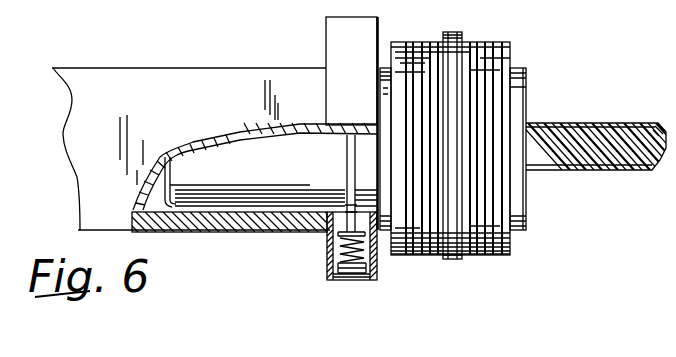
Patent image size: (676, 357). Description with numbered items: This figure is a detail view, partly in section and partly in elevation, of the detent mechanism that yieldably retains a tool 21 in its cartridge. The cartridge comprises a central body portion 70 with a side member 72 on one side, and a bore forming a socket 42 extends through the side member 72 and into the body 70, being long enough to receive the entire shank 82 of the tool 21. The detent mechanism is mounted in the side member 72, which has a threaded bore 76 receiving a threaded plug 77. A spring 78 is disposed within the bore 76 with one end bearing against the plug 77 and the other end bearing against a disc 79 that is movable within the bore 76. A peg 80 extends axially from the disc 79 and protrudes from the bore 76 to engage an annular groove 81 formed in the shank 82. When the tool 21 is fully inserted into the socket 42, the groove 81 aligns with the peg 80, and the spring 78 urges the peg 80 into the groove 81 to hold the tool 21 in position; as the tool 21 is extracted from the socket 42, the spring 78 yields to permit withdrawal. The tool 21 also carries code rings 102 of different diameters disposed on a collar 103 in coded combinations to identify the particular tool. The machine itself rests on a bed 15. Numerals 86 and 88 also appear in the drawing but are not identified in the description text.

The bed 15 is at (386, 262).
The tool 21 is at (560, 107).
The socket 42 is at (175, 188).
The central body portion 70 is at (168, 97).
The side member 72 is at (340, 50).
The threaded bore 76 is at (337, 267).
The threaded plug 77 is at (352, 274).
The spring 78 is at (343, 253).
The disc 79 is at (345, 237).
The peg 80 is at (350, 210).
The annular groove 81 is at (348, 142).
The shank 82 is at (248, 142).
The cylinder body 86 is at (384, 127).
The wall 88 is at (64, 115).
The code rings 102 is at (473, 42).
The collar 103 is at (502, 60).